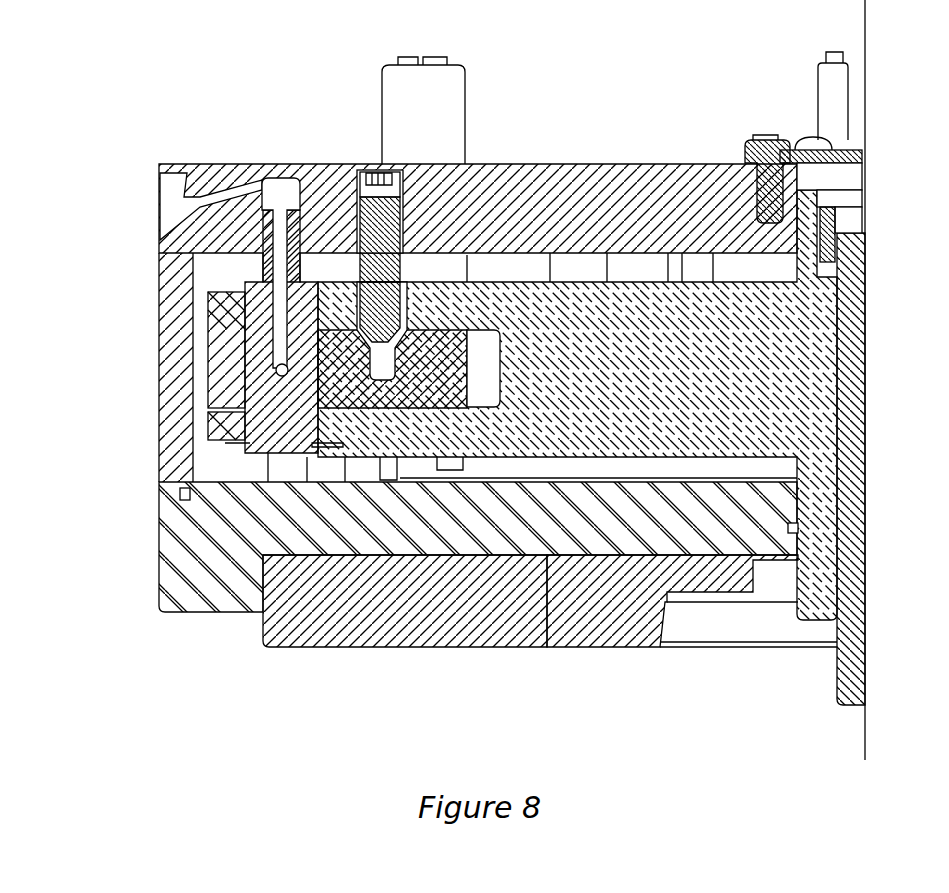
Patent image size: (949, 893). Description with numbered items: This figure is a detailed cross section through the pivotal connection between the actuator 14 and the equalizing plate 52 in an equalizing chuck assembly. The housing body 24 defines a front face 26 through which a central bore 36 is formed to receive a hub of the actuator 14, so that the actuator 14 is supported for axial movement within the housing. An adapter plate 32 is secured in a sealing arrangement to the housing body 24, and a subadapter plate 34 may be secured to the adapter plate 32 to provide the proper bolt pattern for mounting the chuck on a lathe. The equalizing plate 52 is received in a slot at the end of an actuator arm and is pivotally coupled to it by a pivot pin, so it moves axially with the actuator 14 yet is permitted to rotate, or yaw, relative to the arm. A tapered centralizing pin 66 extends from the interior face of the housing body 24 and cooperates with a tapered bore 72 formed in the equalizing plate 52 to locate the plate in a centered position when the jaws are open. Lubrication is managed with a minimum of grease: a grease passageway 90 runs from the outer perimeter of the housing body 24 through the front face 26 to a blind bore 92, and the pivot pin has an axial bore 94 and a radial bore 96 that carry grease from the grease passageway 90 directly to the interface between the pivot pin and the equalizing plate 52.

The actuator 14 is at (815, 363).
The housing body 24 is at (158, 262).
The front face 26 is at (642, 153).
The adapter plate 32 is at (177, 571).
The subadapter plate 34 is at (322, 628).
The central bore 36 is at (847, 152).
The equalizing plate 52 is at (346, 398).
The tapered centralizing pin 66 is at (398, 270).
The tapered bore 72 is at (402, 350).
The grease passageway 90 is at (224, 192).
The blind bore 92 is at (296, 197).
The axial bore 94 is at (245, 327).
The radial bore 96 is at (282, 376).